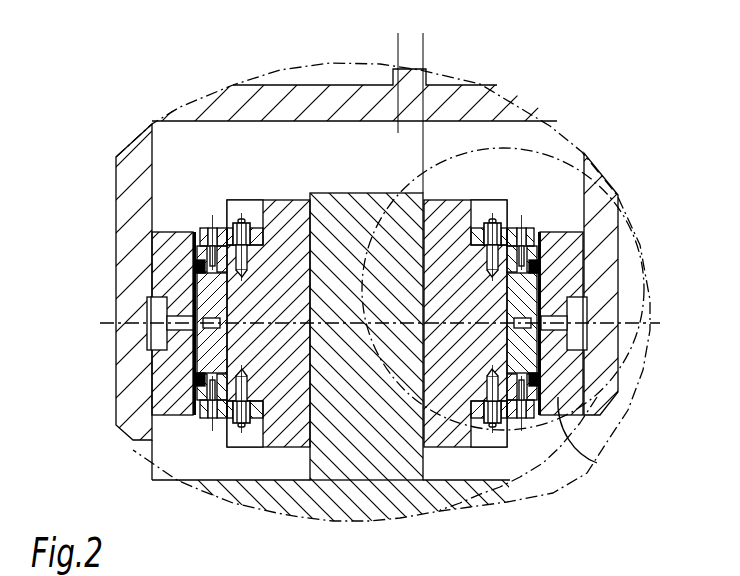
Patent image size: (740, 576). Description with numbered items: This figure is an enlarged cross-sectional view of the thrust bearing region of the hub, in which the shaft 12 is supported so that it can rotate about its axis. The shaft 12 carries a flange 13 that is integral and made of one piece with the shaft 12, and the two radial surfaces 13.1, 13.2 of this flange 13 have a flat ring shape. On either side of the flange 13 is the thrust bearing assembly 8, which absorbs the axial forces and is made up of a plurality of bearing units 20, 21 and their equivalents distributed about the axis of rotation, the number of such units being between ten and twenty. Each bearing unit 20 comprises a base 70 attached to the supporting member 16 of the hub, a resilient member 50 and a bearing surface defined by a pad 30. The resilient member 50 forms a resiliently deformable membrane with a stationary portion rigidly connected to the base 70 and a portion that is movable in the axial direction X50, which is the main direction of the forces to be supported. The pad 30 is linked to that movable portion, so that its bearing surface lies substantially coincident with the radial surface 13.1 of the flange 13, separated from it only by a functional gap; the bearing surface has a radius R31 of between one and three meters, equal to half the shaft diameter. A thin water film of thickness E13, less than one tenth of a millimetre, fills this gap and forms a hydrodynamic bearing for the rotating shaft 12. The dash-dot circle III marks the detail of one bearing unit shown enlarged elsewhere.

The bearing assembly 8 is at (113, 140).
The bearing unit 21 is at (172, 138).
The supporting member 16 is at (130, 180).
The shaft 12 is at (299, 500).
The flange 13 is at (338, 207).
The radial surface 13.2 is at (305, 248).
The radial surface 13.1 is at (430, 251).
The resilient member 50 is at (527, 438).
The pad 30 is at (474, 358).
The bearing unit 20 is at (520, 172).
The detail section III is at (552, 143).
The base 70 is at (597, 463).
The axial direction X50 is at (395, 314).
The thickness E13 is at (384, 45).
The radius R31 is at (453, 448).